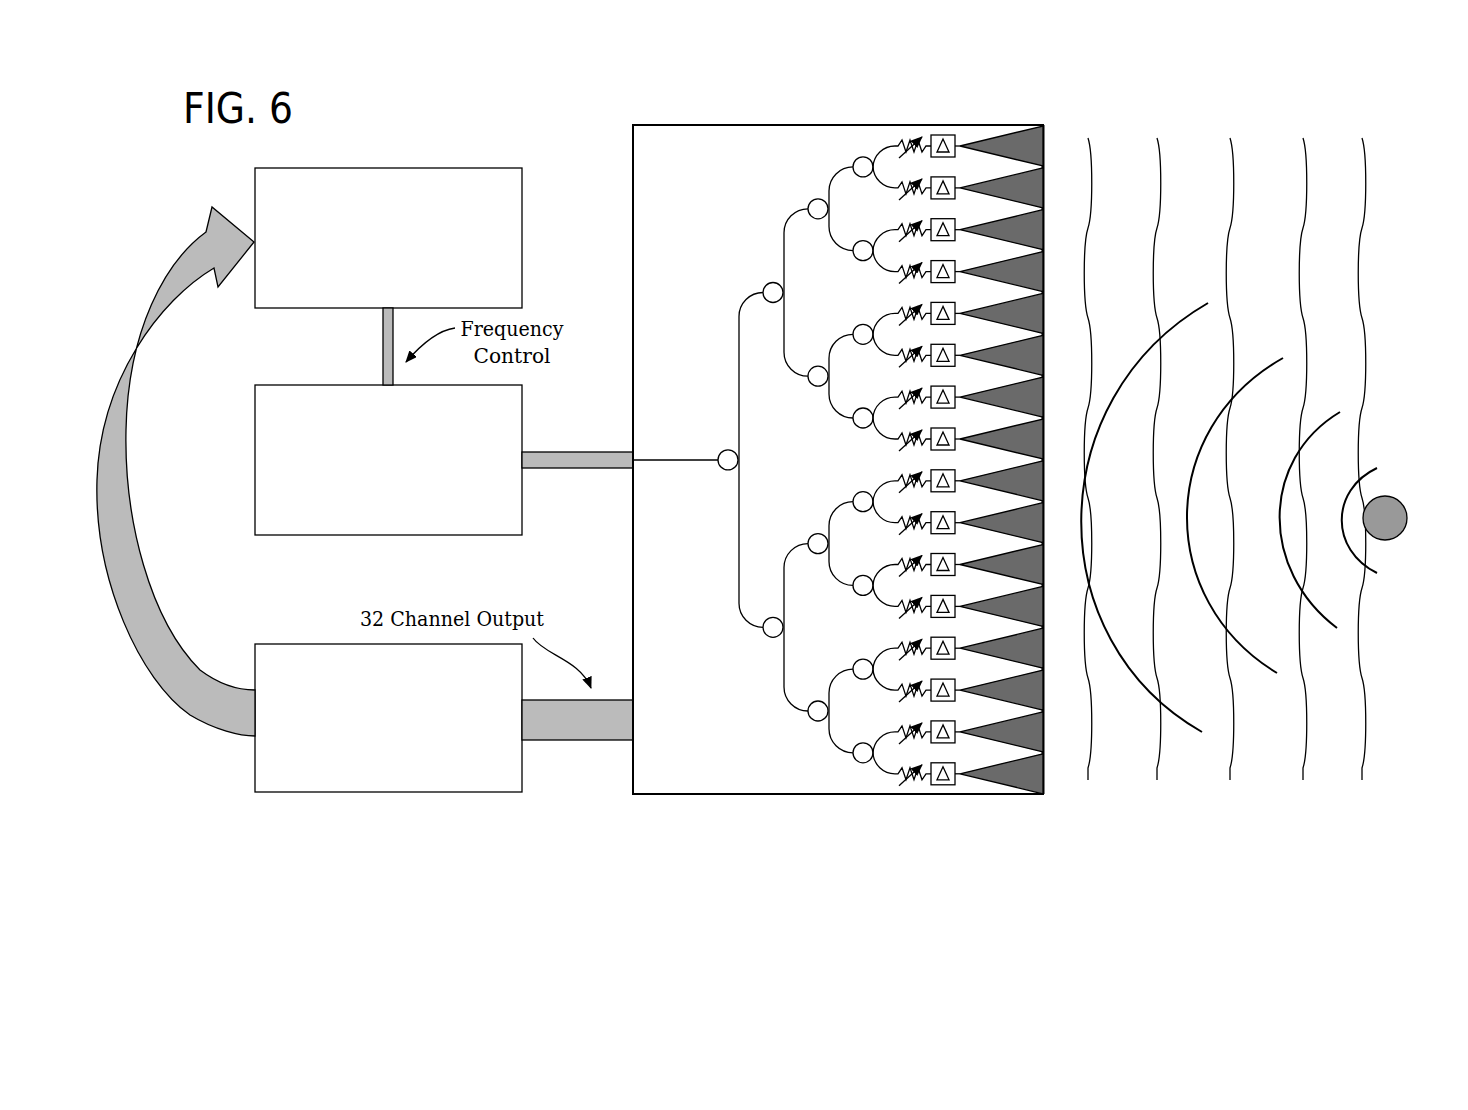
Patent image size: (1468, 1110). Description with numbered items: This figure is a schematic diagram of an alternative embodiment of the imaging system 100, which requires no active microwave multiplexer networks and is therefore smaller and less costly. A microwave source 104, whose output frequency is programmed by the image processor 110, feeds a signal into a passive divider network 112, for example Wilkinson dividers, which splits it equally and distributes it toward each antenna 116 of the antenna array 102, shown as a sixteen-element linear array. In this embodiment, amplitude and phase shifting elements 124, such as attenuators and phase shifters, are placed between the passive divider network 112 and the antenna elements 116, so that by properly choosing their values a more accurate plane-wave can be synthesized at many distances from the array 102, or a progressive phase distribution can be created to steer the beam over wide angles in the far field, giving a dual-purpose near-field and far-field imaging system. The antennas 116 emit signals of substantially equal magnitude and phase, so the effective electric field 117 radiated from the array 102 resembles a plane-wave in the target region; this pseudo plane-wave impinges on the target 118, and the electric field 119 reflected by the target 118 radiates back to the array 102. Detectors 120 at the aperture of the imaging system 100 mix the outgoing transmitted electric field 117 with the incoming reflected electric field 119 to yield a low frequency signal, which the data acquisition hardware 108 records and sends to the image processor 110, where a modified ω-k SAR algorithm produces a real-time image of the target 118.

The imaging system 100 is at (905, 463).
The antenna array 102 is at (1015, 806).
The microwave source 104 is at (255, 503).
The data acquisition hardware 108 is at (291, 642).
The image processor 110 is at (497, 168).
The passive divider network 112 is at (765, 658).
The antenna 116 is at (1017, 125).
The electric field 117 is at (1238, 142).
The target 118 is at (1402, 474).
The reflected electric field 119 is at (1257, 692).
The detectors 120 is at (1045, 133).
The amplitude and phase shifting elements 124 is at (939, 128).